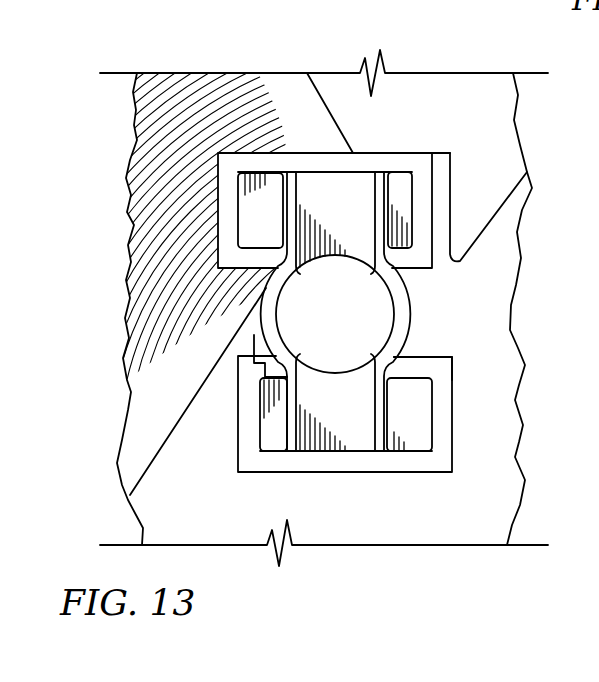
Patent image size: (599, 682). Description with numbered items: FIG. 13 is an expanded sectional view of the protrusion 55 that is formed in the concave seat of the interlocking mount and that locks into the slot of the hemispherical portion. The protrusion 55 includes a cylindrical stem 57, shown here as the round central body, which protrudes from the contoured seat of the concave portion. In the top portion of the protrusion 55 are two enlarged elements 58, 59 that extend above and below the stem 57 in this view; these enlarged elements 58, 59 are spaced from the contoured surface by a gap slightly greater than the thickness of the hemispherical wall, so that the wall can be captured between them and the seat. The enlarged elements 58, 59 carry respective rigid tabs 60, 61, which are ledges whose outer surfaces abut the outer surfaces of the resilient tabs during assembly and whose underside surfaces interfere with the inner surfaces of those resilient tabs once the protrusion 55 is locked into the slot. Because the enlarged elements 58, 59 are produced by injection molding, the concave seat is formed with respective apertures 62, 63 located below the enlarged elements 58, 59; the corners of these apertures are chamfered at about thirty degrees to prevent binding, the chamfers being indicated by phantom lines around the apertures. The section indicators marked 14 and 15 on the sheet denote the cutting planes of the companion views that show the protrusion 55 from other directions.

The housing wall 14 is at (275, 466).
The section line indicator 15 is at (320, 366).
The protrusion 55 is at (375, 307).
The cylindrical stem 57 is at (414, 318).
The enlarged element 58 is at (345, 192).
The enlarged element 59 is at (343, 428).
The rigid tab 60 is at (255, 192).
The rigid tab 61 is at (417, 420).
The aperture 62 is at (420, 166).
The aperture 63 is at (428, 360).